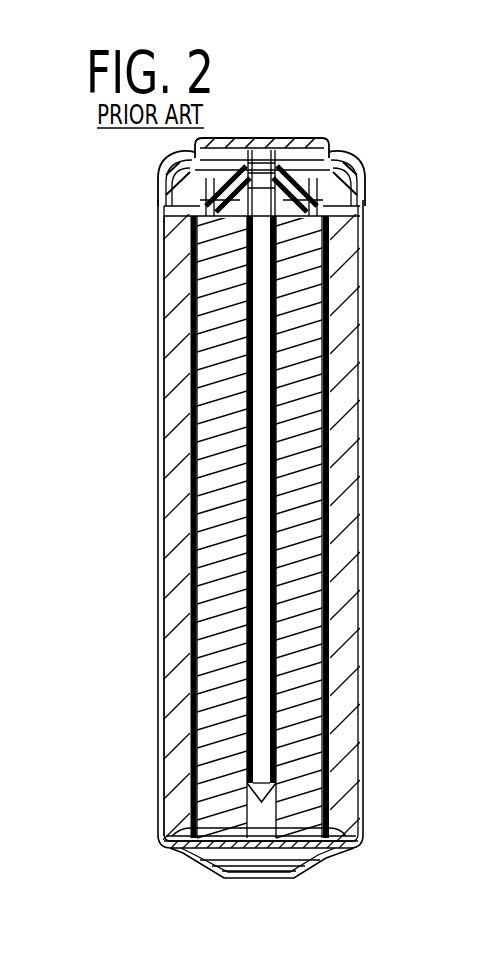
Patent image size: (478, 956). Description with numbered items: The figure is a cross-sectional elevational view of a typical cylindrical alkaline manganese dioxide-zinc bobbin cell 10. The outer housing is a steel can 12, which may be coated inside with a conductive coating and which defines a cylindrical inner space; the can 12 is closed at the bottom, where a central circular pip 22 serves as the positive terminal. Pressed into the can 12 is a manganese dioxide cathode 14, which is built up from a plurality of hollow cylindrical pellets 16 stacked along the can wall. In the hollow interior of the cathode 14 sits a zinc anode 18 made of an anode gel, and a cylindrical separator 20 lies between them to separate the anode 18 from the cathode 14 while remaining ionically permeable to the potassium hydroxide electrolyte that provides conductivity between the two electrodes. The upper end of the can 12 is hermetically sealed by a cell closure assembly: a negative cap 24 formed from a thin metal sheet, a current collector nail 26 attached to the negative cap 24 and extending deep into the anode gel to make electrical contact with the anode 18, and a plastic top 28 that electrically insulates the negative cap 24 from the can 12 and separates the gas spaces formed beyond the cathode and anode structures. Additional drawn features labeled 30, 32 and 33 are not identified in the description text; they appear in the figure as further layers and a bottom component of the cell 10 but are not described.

The alkaline manganese dioxide-zinc bobbin cell 10 is at (367, 472).
The steel can 12 is at (161, 337).
The manganese dioxide cathode 14 is at (173, 548).
The hollow cylindrical pellets 16 is at (368, 525).
The zinc anode 18 is at (298, 414).
The cylindrical separator 20 is at (326, 332).
The central circular pip 22 is at (290, 880).
The negative cap 24 is at (290, 141).
The current collector nail 26 is at (262, 297).
The plastic top 28 is at (362, 173).
The separator layer 30 is at (202, 417).
The electrode layer 32 is at (178, 475).
The bottom insulator 33 is at (168, 843).